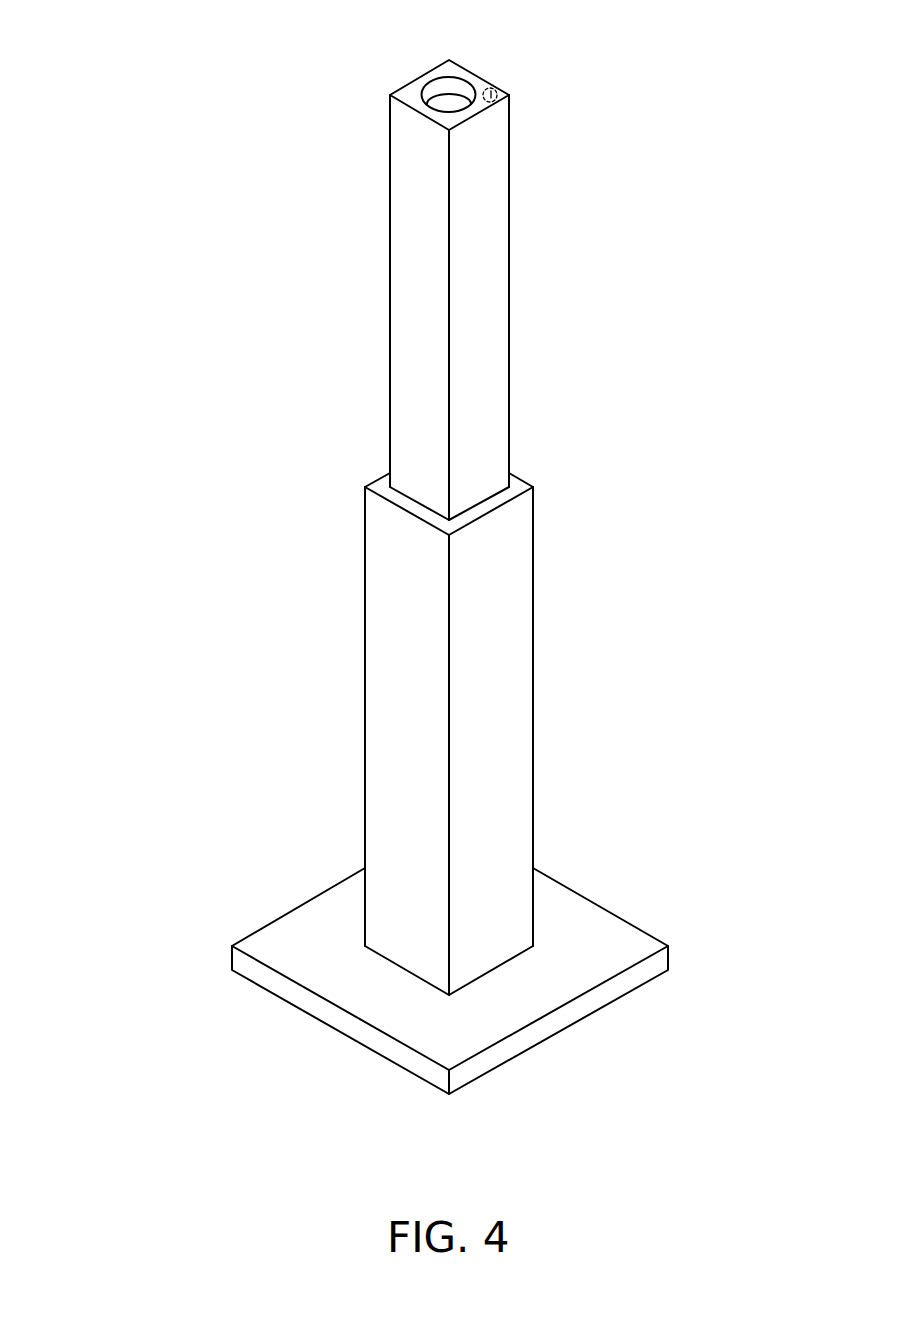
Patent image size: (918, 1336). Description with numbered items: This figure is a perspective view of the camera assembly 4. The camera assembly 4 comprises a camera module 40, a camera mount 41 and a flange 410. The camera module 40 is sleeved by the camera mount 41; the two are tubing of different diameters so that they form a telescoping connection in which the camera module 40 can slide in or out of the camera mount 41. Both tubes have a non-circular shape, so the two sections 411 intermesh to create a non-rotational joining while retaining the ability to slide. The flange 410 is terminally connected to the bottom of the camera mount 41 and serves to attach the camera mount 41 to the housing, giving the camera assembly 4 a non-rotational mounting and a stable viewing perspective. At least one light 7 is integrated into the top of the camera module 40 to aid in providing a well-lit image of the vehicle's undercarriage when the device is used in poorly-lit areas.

The camera assembly 4 is at (138, 509).
The camera module 40 is at (422, 267).
The camera mount 41 is at (426, 697).
The flange 410 is at (295, 995).
The intermeshing sections 411 is at (494, 488).
The light 7 is at (491, 88).